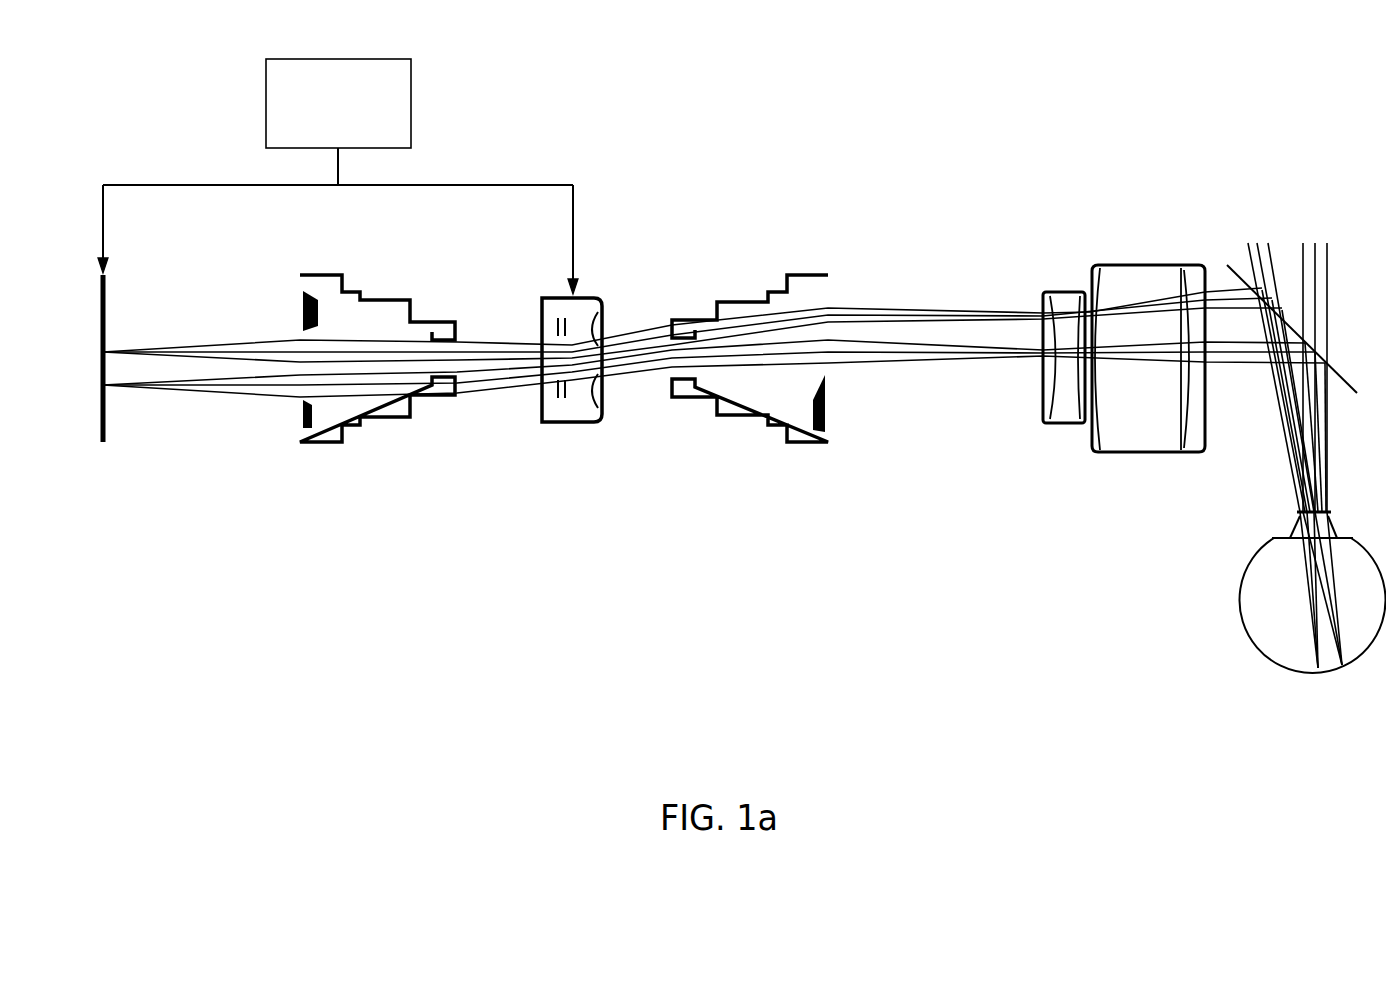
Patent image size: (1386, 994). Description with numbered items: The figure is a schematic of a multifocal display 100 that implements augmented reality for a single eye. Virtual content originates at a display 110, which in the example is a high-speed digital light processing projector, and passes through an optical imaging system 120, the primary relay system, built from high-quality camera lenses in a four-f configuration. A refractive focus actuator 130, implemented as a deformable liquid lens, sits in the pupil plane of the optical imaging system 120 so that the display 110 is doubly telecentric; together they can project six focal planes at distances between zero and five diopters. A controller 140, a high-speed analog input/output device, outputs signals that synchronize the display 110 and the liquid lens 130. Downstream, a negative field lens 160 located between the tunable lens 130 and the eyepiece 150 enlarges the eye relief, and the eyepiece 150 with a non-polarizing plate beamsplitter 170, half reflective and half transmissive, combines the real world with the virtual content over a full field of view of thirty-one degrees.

The multifocal display 100 is at (963, 76).
The display 110 is at (102, 447).
The optical imaging system 120 is at (564, 345).
The refractive focus actuator 130 is at (626, 281).
The controller 140 is at (338, 176).
The eyepiece 150 is at (1132, 455).
The negative field lens 160 is at (1062, 426).
The beamsplitter 170 is at (1227, 265).